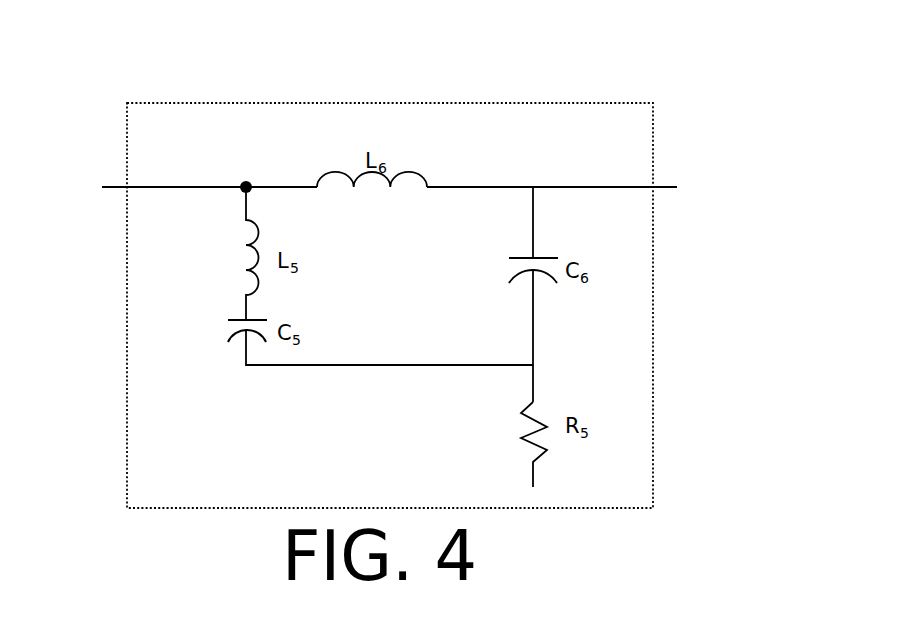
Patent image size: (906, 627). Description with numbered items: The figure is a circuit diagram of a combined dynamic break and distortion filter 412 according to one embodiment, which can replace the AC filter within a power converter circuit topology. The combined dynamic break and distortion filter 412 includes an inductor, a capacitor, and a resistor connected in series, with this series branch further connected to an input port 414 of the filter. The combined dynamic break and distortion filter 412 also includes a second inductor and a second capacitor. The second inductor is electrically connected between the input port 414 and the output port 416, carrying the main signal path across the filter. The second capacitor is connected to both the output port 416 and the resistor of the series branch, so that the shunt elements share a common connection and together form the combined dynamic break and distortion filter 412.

The combined dynamic break and distortion filter 412 is at (654, 125).
The input port 414 is at (186, 183).
The output port 416 is at (585, 185).